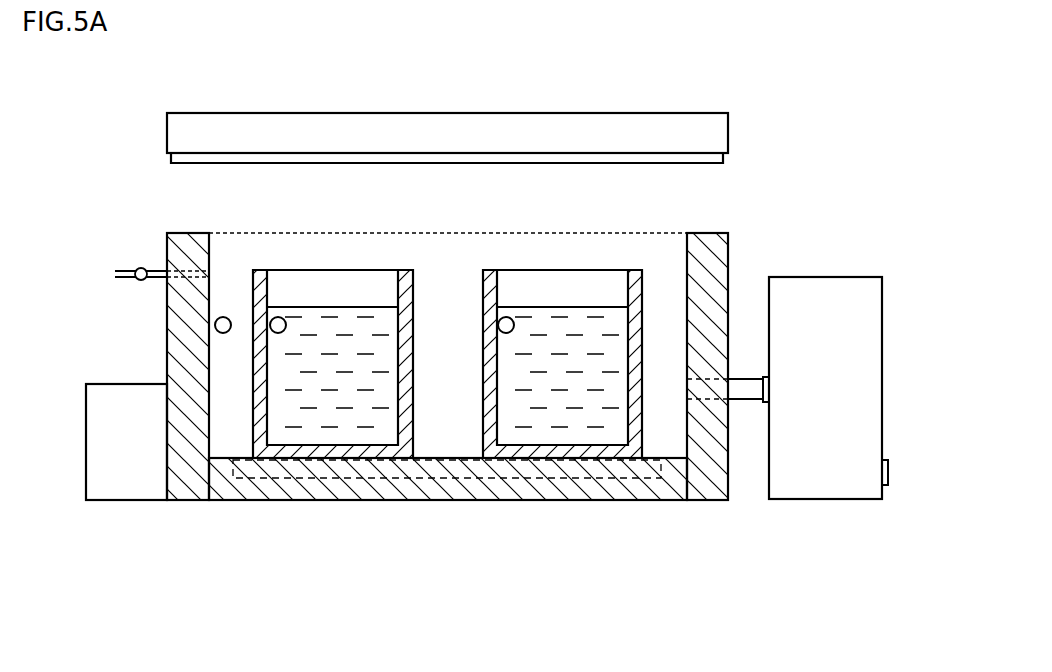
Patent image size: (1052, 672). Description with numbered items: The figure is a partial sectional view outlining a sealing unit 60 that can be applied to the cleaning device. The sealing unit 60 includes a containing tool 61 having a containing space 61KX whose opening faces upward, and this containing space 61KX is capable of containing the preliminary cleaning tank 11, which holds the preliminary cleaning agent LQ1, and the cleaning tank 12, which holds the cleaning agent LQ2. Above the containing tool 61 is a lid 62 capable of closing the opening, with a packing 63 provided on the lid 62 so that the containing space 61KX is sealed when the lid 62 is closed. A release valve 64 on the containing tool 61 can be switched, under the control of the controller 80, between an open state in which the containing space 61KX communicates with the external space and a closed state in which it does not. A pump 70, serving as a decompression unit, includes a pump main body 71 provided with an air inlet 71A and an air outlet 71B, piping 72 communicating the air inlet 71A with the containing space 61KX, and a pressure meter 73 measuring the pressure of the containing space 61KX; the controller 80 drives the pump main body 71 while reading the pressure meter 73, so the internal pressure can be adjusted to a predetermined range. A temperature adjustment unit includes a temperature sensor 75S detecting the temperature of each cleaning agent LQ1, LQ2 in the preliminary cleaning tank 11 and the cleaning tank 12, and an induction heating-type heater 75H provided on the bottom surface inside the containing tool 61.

The sealing unit 60 is at (767, 166).
The lid 62 is at (618, 135).
The packing 63 is at (187, 160).
The containing tool 61 is at (183, 499).
The containing space 61KX is at (668, 255).
The controller 80 is at (126, 442).
The release valve 64 is at (137, 279).
The induction heating-type heater 75H is at (327, 476).
The preliminary cleaning tank 11 is at (412, 268).
The preliminary cleaning agent LQ1 is at (327, 304).
The cleaning tank 12 is at (640, 272).
The cleaning agent LQ2 is at (573, 304).
The pressure meter 73 is at (224, 316).
The temperature sensor 75S is at (278, 316).
The pump 70 is at (834, 248).
The piping 72 is at (748, 378).
The air inlet 71A is at (766, 402).
The pump main body 71 is at (833, 478).
The air outlet 71B is at (889, 460).